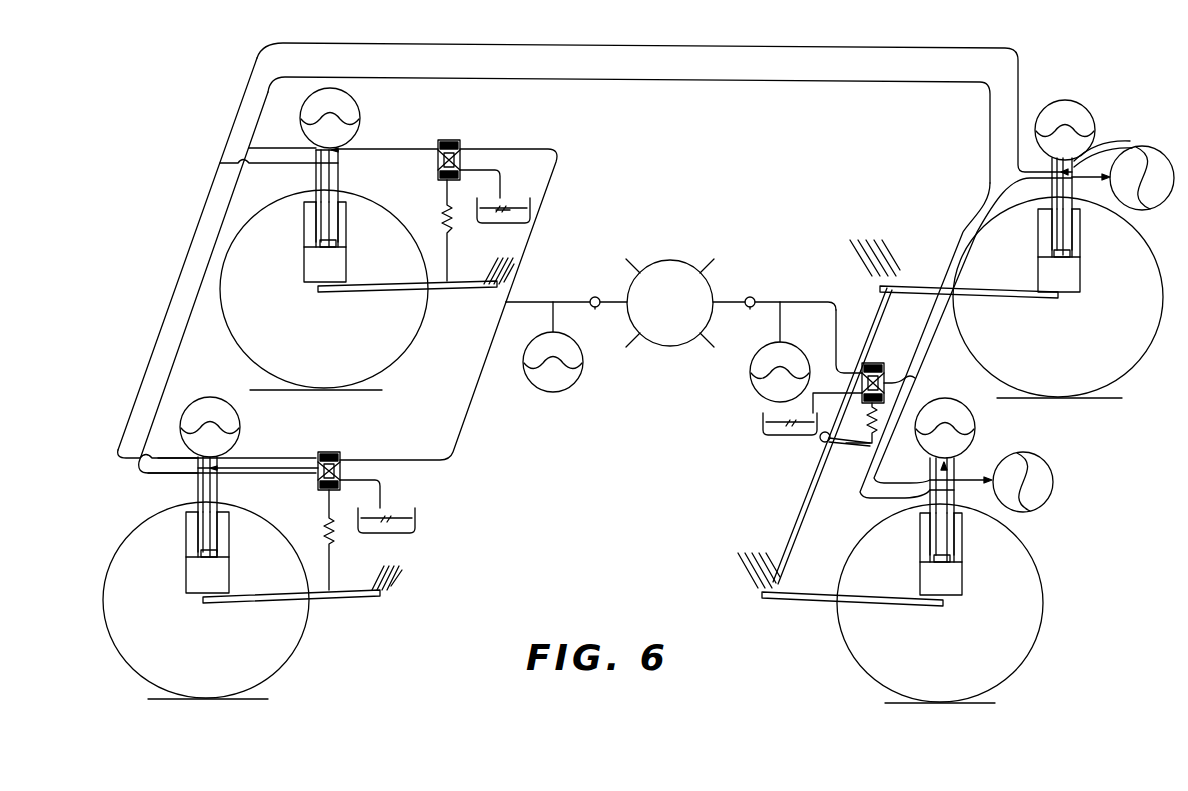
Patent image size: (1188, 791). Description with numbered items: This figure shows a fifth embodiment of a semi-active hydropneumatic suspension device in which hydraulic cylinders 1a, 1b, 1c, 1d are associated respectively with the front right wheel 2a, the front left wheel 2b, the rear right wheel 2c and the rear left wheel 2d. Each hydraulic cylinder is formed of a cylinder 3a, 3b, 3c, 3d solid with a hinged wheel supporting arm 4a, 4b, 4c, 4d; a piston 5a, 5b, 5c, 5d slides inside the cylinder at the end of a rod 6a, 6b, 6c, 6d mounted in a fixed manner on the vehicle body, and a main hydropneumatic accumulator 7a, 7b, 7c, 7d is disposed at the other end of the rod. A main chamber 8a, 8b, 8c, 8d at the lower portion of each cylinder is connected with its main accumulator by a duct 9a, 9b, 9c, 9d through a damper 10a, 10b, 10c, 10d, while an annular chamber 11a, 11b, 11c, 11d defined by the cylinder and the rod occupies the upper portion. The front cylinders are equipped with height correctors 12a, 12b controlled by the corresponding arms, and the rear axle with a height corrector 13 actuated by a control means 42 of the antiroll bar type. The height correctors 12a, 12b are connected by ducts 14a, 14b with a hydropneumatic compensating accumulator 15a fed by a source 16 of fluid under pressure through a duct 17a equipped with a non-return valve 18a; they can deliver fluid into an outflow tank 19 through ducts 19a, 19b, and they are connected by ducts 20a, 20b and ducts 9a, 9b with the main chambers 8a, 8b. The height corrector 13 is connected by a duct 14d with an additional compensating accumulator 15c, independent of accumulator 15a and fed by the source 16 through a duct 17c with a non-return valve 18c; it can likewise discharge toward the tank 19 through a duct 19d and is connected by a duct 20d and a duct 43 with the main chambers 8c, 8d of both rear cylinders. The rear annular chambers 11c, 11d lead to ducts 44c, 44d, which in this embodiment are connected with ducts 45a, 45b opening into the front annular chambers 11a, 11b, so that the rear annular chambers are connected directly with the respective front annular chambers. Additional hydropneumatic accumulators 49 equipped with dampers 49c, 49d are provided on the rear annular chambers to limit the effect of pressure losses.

The hydraulic cylinder 1a is at (337, 184).
The hydraulic cylinder 1b is at (213, 498).
The hydraulic cylinder 1c is at (1074, 175).
The hydraulic cylinder 1d is at (923, 494).
The front right wheel 2a is at (402, 352).
The front left wheel 2b is at (292, 646).
The rear right wheel 2c is at (1099, 398).
The rear left wheel 2d is at (1045, 620).
The cylinder 3a is at (348, 246).
The cylinder 3b is at (229, 556).
The cylinder 3c is at (1081, 260).
The cylinder 3d is at (963, 575).
The hinged wheel supporting arm 4a is at (448, 290).
The hinged wheel supporting arm 4b is at (348, 600).
The hinged wheel supporting arm 4c is at (1006, 300).
The hinged wheel supporting arm 4d is at (805, 604).
The piston 5a is at (306, 254).
The piston 5b is at (186, 566).
The piston 5c is at (1040, 258).
The piston 5d is at (921, 564).
The rod 6a is at (340, 176).
The rod 6b is at (220, 490).
The rod 6c is at (1082, 165).
The rod 6d is at (873, 512).
The main hydropneumatic accumulator 7a is at (356, 90).
The main hydropneumatic accumulator 7b is at (210, 396).
The main hydropneumatic accumulator 7c is at (1074, 98).
The main hydropneumatic accumulator 7d is at (958, 399).
The main chamber 8a is at (311, 276).
The main chamber 8b is at (192, 586).
The main chamber 8c is at (1081, 288).
The main chamber 8d is at (960, 598).
The duct 9a is at (339, 222).
The duct 9b is at (226, 535).
The duct 9c is at (1074, 230).
The duct 9d is at (955, 540).
The damper 10a is at (346, 150).
The damper 10b is at (222, 460).
The damper 10c is at (1024, 165).
The damper 10d is at (958, 470).
The annular chamber 11a is at (318, 224).
The annular chamber 11b is at (192, 540).
The annular chamber 11c is at (1054, 226).
The annular chamber 11d is at (931, 532).
The height corrector 12a is at (464, 144).
The height corrector 12b is at (344, 455).
The height corrector 13 is at (877, 364).
The duct 14a is at (530, 248).
The duct 14b is at (462, 436).
The duct 14d is at (805, 301).
The hydropneumatic compensating accumulator 15a is at (570, 385).
The additional hydropneumatic compensating accumulator 15c is at (762, 393).
The source of fluid under pressure 16 is at (676, 262).
The duct 17a is at (596, 298).
The duct 17c is at (751, 298).
The non-return valve 18a is at (598, 310).
The non-return valve 18c is at (750, 312).
The outflow tank 19 is at (500, 220).
The duct 19a is at (502, 178).
The duct 19b is at (392, 494).
The return line 19d is at (765, 416).
The duct 20a is at (442, 146).
The duct 20b is at (306, 466).
The duct 20d is at (906, 382).
The control means of the antiroll bar-type 42 is at (798, 507).
The duct 43 is at (860, 497).
The duct 44c is at (618, 45).
The duct 44d is at (608, 80).
The duct 45a is at (250, 164).
The duct 45b is at (152, 376).
The gas accumulator 49 is at (1158, 203).
The accumulator line 49c is at (1128, 146).
The damper 49d is at (1002, 506).